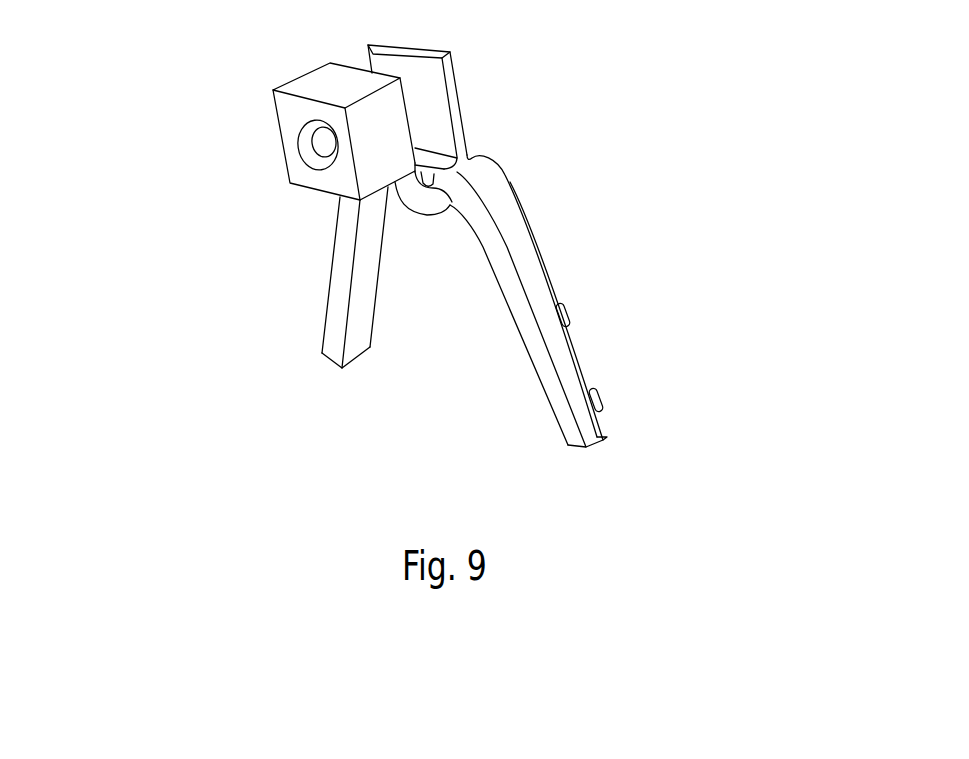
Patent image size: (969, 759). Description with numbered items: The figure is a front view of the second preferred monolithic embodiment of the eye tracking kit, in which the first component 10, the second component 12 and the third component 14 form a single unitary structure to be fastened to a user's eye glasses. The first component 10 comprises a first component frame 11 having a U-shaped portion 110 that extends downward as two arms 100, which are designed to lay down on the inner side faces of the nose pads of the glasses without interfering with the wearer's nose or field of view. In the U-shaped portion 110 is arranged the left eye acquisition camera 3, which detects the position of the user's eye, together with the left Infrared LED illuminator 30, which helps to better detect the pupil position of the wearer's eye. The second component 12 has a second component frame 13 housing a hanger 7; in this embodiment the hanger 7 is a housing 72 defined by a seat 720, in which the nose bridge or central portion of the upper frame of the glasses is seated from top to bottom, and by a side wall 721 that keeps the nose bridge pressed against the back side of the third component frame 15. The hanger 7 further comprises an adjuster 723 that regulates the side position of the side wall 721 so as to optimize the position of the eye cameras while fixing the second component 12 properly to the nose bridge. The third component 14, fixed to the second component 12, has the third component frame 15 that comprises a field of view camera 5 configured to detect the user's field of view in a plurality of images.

The left eye acquisition camera 3 is at (539, 310).
The field of view camera 5 is at (328, 157).
The hanger 7 is at (557, 109).
The first component 10 is at (230, 285).
The first component frame 11 is at (342, 302).
The second component 12 is at (482, 142).
The second component frame 13 is at (440, 182).
The third component 14 is at (278, 148).
The third component frame 15 is at (328, 103).
The left Infrared LED illuminator 30 is at (600, 400).
The housing 72 is at (440, 137).
The arm 100 is at (570, 402).
The U-shaped portion 110 is at (343, 338).
The seat 720 is at (425, 175).
The side wall 721 is at (427, 93).
The adjuster 723 is at (377, 202).